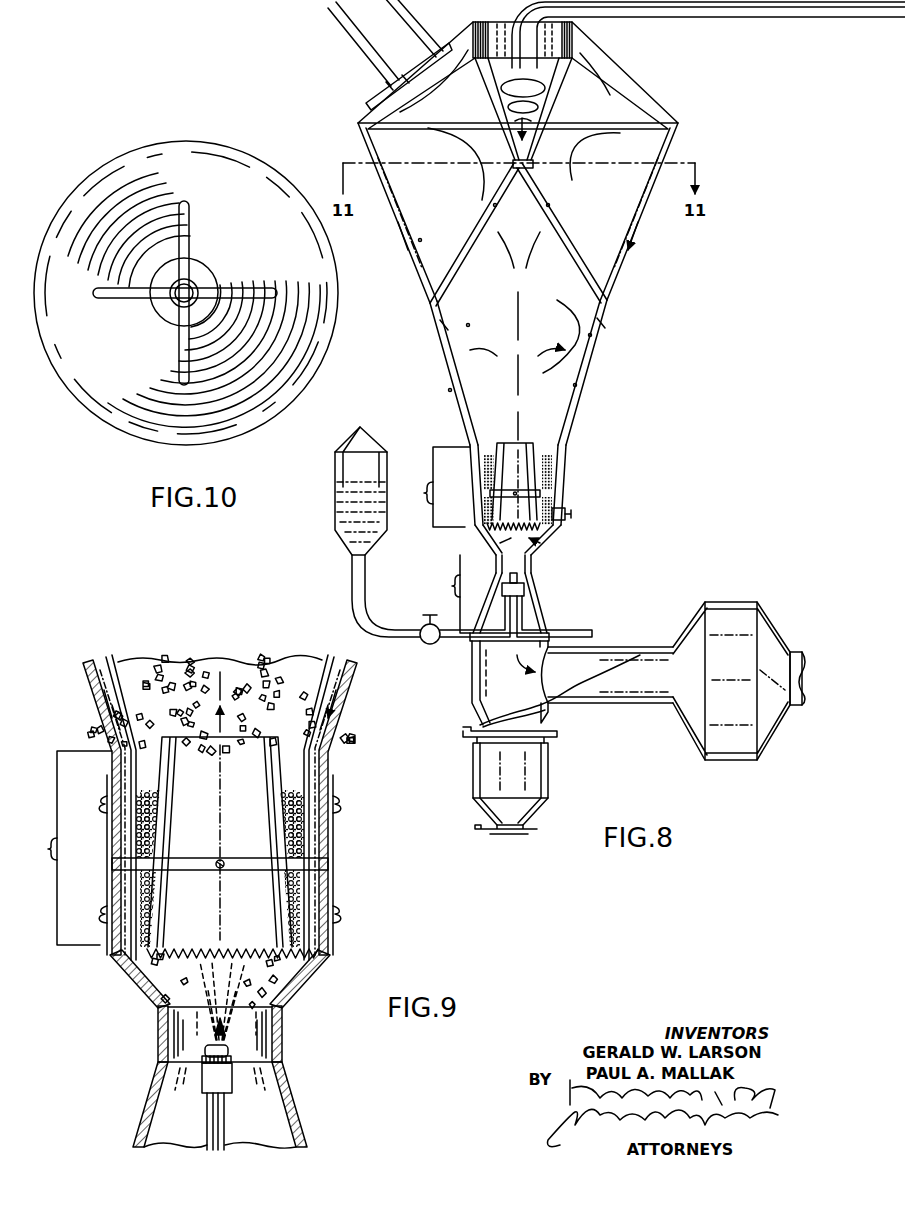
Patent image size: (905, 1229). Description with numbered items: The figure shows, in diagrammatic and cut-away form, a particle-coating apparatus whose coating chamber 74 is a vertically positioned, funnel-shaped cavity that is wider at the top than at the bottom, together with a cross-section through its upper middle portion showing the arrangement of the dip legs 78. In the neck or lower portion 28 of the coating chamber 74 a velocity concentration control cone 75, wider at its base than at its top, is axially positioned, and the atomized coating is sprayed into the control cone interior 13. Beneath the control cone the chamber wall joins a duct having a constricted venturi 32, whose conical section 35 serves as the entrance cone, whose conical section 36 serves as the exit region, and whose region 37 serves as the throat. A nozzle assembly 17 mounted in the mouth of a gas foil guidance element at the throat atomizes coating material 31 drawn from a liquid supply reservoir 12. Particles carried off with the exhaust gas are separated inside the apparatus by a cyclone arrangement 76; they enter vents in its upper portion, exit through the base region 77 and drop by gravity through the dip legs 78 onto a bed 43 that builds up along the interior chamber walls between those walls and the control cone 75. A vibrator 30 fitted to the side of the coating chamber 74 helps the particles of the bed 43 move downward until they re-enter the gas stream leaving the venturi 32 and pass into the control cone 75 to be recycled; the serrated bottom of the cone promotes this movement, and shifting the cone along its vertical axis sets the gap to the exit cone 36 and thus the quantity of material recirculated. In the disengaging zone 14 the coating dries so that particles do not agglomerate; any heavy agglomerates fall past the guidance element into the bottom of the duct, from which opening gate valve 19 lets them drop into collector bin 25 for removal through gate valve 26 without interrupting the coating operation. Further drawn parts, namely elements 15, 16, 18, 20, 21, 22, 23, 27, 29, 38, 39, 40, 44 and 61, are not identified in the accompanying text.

In FIG. 8, the liquid supply reservoir 12 is at (333, 463).
In FIG. 8, the control cone interior 13 is at (553, 436).
In FIG. 9, the control cone interior 13 is at (253, 782).
In FIG. 8, the disengaging zone 14 is at (597, 340).
In FIG. 8, the support plate 15 is at (548, 492).
In FIG. 9, the support plate 15 is at (333, 866).
In FIG. 9, the flange 16 is at (105, 800).
In FIG. 8, the nozzle assembly 17 is at (517, 585).
In FIG. 9, the nozzle assembly 17 is at (223, 1087).
In FIG. 8, the valve 18 is at (420, 643).
In FIG. 8, the gate valve 19 is at (463, 730).
In FIG. 8, the cyclone separator 20 is at (732, 612).
In FIG. 8, the exhaust pipe 21 is at (682, 18).
In FIG. 8, the fuel supply pipe 22 is at (593, 643).
In FIG. 9, the fuel supply pipe 22 is at (225, 1130).
In FIG. 8, the binder supply pipe 23 is at (459, 640).
In FIG. 9, the binder supply pipe 23 is at (207, 1130).
In FIG. 8, the collector bin 25 is at (490, 772).
In FIG. 8, the gate valve 26 is at (478, 832).
In FIG. 9, the refractory lining 27 is at (335, 858).
In FIG. 8, the neck or lower portion 28 is at (434, 487).
In FIG. 9, the neck or lower portion 28 is at (65, 848).
In FIG. 8, the spray zone 29 is at (517, 534).
In FIG. 9, the spray zone 29 is at (283, 967).
In FIG. 8, the vibrator 30 is at (553, 526).
In FIG. 9, the vibrator 30 is at (232, 953).
In FIG. 8, the coating material 31 is at (343, 518).
In FIG. 8, the venturi 32 is at (448, 594).
In FIG. 8, the entrance cone 35 is at (545, 613).
In FIG. 9, the entrance cone 35 is at (292, 1116).
In FIG. 8, the exit cone 36 is at (553, 533).
In FIG. 9, the exit cone 36 is at (140, 992).
In FIG. 8, the throat region 37 is at (491, 556).
In FIG. 9, the throat region 37 is at (284, 1036).
In FIG. 8, the base plate 38 is at (535, 635).
In FIG. 8, the inlet flange 39 is at (368, 97).
In FIG. 9, the particulate material 40 is at (130, 682).
In FIG. 8, the bed 43 is at (552, 501).
In FIG. 9, the bed 43 is at (322, 905).
In FIG. 8, the feed pipe 44 is at (360, 65).
In FIG. 8, the discharge duct 61 is at (647, 710).
In FIG. 8, the coating chamber 74 is at (410, 278).
In FIG. 10, the coating chamber 74 is at (322, 350).
In FIG. 9, the coating chamber 74 is at (341, 712).
In FIG. 8, the velocity concentration control cone 75 is at (482, 473).
In FIG. 9, the velocity concentration control cone 75 is at (283, 790).
In FIG. 8, the cyclone arrangement 76 is at (553, 122).
In FIG. 8, the base region 77 is at (545, 188).
In FIG. 10, the base region 77 is at (178, 300).
In FIG. 8, the dip legs 78 is at (440, 325).
In FIG. 10, the dip legs 78 is at (189, 224).
In FIG. 9, the dip legs 78 is at (103, 663).